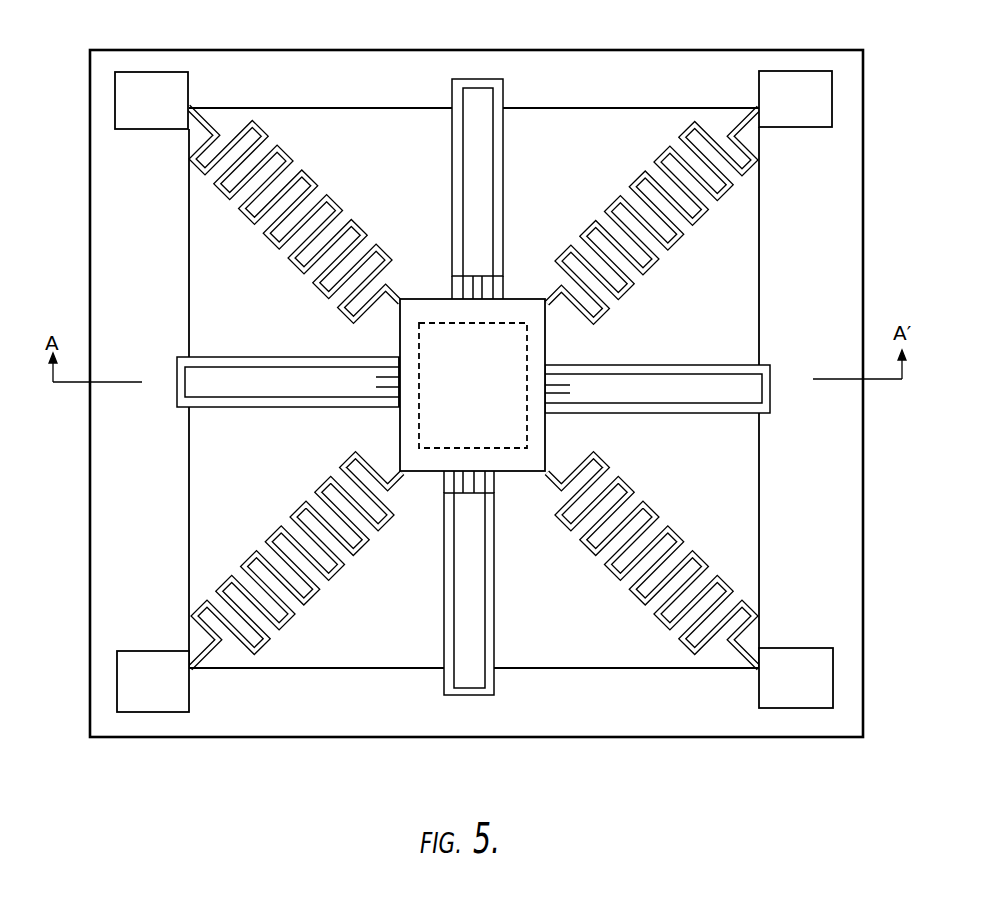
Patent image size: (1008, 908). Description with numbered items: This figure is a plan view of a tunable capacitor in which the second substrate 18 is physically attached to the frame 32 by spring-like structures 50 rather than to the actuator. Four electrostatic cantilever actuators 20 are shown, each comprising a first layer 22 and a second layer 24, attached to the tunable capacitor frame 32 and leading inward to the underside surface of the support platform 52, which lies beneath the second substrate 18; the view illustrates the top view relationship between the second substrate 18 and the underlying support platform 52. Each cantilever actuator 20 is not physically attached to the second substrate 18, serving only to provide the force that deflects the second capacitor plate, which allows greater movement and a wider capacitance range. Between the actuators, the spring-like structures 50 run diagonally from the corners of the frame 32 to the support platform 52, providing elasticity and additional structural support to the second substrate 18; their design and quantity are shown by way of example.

The second substrate 18 is at (487, 401).
The electrostatic cantilever actuator 20 is at (470, 50).
The first layer 22 is at (497, 213).
The second layer 24 is at (480, 158).
The frame 32 is at (833, 537).
The spring-like structures 50 is at (333, 200).
The support platform 52 is at (437, 308).